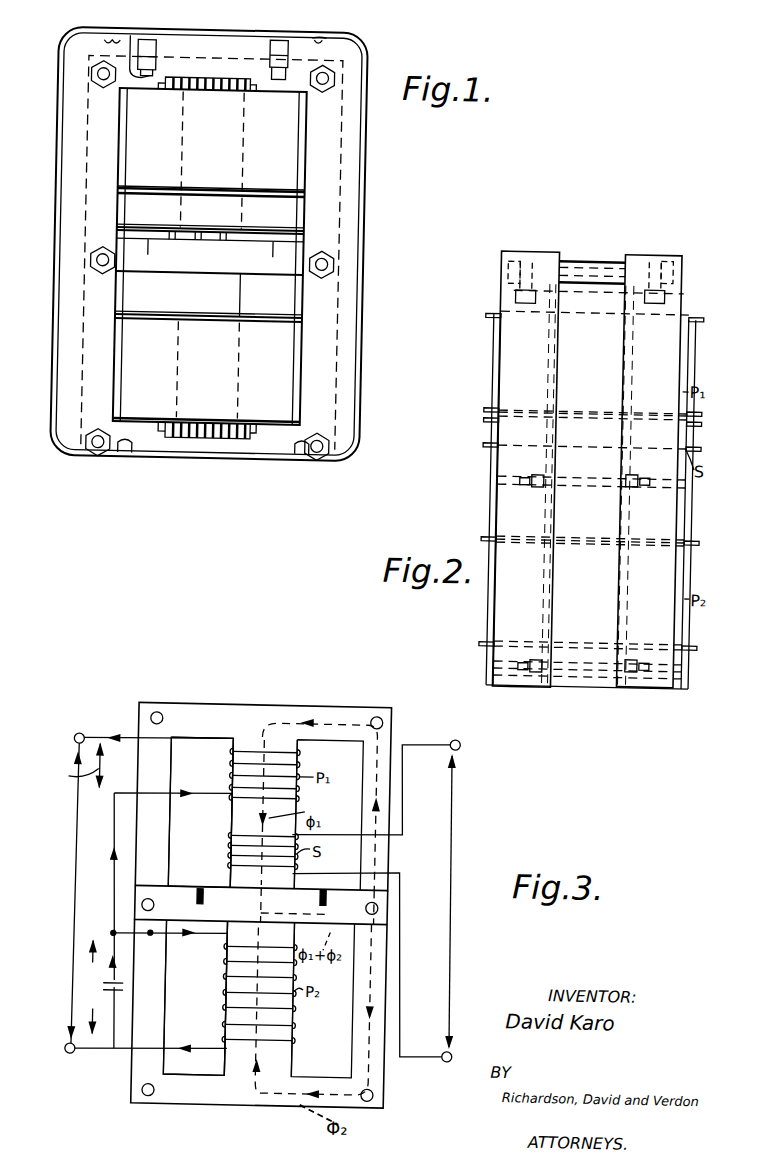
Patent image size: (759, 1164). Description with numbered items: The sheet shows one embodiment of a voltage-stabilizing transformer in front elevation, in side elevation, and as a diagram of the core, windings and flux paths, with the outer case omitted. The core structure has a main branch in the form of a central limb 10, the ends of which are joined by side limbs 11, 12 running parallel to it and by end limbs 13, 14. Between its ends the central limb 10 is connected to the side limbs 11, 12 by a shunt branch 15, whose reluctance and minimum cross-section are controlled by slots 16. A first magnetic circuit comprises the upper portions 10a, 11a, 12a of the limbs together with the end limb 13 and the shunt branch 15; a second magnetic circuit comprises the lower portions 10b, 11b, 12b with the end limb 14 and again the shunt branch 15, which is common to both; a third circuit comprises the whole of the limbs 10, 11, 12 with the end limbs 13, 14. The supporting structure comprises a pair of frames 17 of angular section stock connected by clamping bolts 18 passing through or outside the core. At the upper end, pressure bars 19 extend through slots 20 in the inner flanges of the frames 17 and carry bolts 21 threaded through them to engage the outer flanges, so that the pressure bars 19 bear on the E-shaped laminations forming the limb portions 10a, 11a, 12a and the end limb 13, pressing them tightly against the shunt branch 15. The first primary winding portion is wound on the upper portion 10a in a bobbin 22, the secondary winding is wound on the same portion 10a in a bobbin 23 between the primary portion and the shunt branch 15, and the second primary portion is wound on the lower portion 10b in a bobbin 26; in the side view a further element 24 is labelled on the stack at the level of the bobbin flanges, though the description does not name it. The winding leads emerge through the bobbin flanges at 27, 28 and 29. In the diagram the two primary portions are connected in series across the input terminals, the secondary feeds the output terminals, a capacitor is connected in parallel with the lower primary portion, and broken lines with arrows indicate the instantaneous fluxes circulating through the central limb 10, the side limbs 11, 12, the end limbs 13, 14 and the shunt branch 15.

In FIG. 3, the central limb 10 is at (301, 762).
In FIG. 3, the upper portion of central limb 10a is at (230, 809).
In FIG. 3, the lower portion of central limb 10b is at (293, 1064).
In FIG. 3, the side limb 11 is at (125, 1069).
In FIG. 3, the upper portion of side limb 11a is at (171, 840).
In FIG. 3, the lower portion of side limb 11b is at (170, 1002).
In FIG. 3, the side limb 12 is at (399, 1077).
In FIG. 3, the upper portion of side limb 12a is at (356, 810).
In FIG. 3, the lower portion of side limb 12b is at (355, 1017).
In FIG. 3, the end limb 13 is at (256, 710).
In FIG. 3, the end limb 14 is at (243, 1107).
In FIG. 3, the shunt branch 15 is at (261, 904).
In FIG. 3, the slots 16 is at (200, 891).
In FIG. 2, the frames 17 is at (512, 300).
In FIG. 1, the clamping bolts 18 is at (88, 72).
In FIG. 1, the pressure bars 19 is at (146, 51).
In FIG. 2, the pressure bars 19 is at (567, 270).
In FIG. 1, the slots 20 is at (132, 41).
In FIG. 1, the bolts 21 is at (118, 40).
In FIG. 1, the bobbin 22 is at (305, 190).
In FIG. 1, the bobbin 23 is at (305, 226).
In FIG. 2, the spacer 24 is at (683, 420).
In FIG. 1, the bobbin 26 is at (305, 316).
In FIG. 2, the bobbin 26 is at (687, 538).
In FIG. 1, the lead outlet 27 is at (234, 77).
In FIG. 1, the lead outlet 28 is at (230, 241).
In FIG. 1, the lead outlet 29 is at (194, 441).